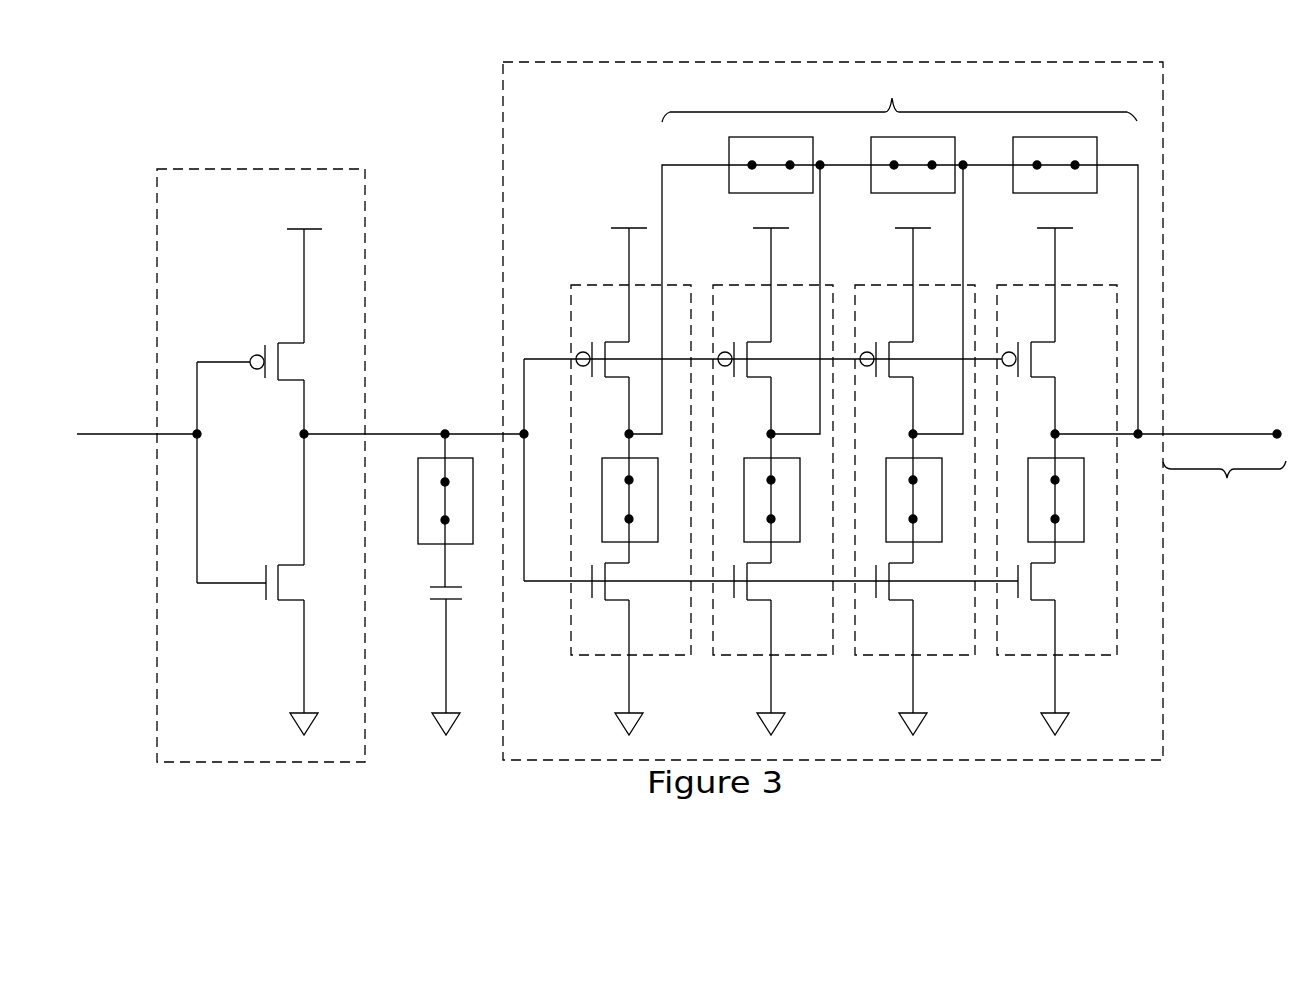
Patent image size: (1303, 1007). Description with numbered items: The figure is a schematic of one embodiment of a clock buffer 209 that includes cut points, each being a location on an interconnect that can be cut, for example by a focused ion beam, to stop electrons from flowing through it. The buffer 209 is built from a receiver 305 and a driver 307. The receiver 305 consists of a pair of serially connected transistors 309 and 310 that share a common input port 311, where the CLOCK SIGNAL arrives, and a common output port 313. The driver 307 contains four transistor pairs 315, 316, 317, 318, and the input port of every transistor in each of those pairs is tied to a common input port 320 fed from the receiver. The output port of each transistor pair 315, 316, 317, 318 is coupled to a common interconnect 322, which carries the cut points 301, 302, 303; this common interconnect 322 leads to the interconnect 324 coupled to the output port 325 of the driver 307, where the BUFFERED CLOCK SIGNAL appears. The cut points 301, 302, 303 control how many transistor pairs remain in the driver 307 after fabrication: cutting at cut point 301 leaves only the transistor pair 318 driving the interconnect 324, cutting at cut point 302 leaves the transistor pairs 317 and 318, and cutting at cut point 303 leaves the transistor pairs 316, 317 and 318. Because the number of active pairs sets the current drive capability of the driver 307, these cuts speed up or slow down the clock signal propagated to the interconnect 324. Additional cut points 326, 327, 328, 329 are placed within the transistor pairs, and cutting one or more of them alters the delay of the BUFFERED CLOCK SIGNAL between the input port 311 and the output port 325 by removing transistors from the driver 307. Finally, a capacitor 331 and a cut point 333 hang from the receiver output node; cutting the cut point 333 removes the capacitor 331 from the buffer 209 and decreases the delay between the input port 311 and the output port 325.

The buffer 209 is at (330, 74).
The cut point 301 is at (1029, 194).
The cut point 302 is at (887, 194).
The cut point 303 is at (745, 194).
The receiver 305 is at (271, 169).
The driver 307 is at (1070, 62).
The transistor 309 is at (282, 362).
The transistor 310 is at (282, 583).
The common input port 311 is at (158, 437).
The common output port 313 is at (366, 436).
The transistor pair 315 is at (663, 657).
The transistor pair 316 is at (781, 481).
The transistor pair 317 is at (923, 481).
The transistor pair 318 is at (1065, 481).
The common input port 320 is at (500, 434).
The common interconnect 322 is at (899, 96).
The interconnect 324 is at (1227, 479).
The output port 325 is at (1162, 436).
The cut point 326 is at (616, 458).
The cut point 327 is at (759, 485).
The cut point 328 is at (901, 485).
The cut point 329 is at (1043, 485).
The capacitor 331 is at (436, 601).
The cut point 333 is at (426, 544).